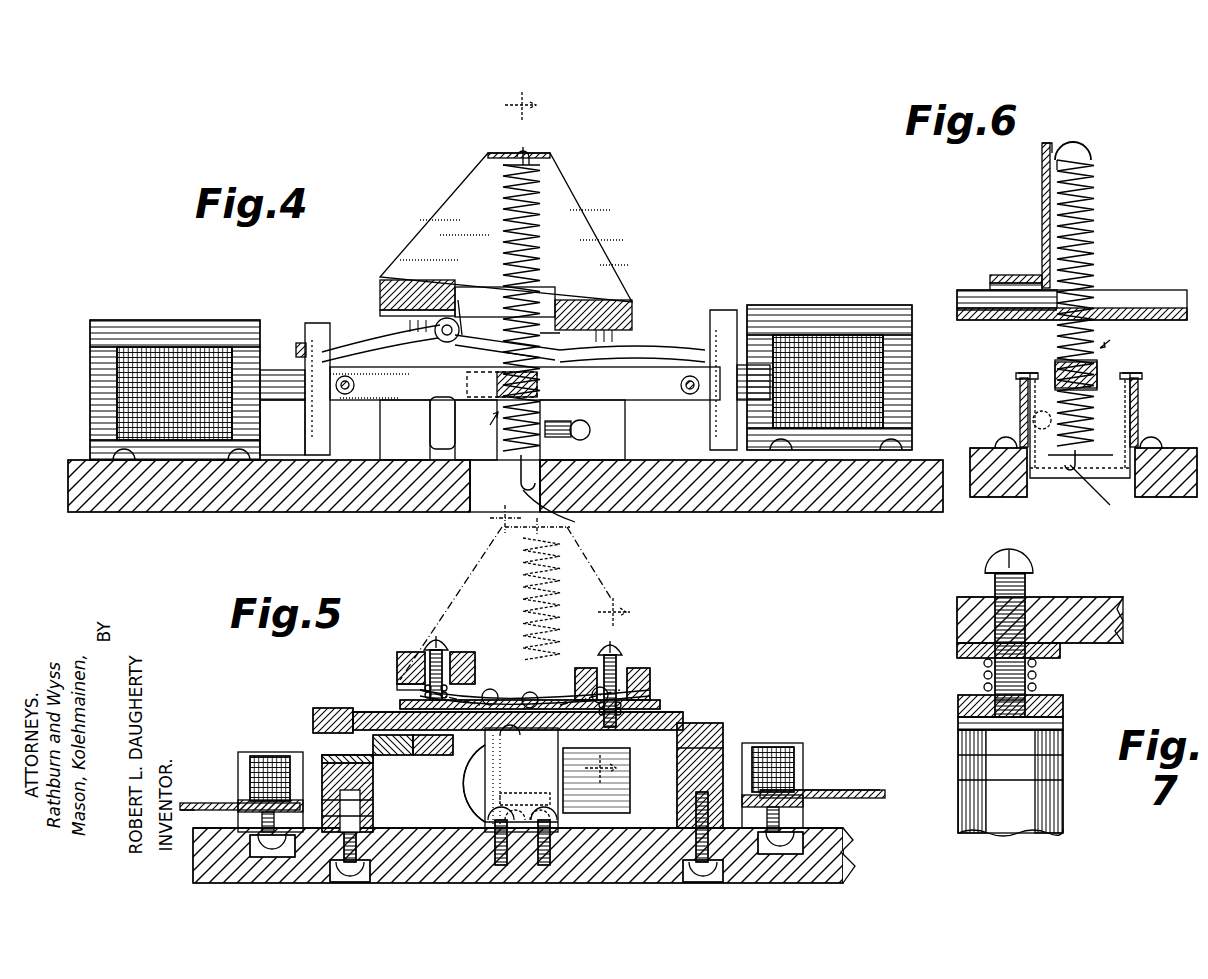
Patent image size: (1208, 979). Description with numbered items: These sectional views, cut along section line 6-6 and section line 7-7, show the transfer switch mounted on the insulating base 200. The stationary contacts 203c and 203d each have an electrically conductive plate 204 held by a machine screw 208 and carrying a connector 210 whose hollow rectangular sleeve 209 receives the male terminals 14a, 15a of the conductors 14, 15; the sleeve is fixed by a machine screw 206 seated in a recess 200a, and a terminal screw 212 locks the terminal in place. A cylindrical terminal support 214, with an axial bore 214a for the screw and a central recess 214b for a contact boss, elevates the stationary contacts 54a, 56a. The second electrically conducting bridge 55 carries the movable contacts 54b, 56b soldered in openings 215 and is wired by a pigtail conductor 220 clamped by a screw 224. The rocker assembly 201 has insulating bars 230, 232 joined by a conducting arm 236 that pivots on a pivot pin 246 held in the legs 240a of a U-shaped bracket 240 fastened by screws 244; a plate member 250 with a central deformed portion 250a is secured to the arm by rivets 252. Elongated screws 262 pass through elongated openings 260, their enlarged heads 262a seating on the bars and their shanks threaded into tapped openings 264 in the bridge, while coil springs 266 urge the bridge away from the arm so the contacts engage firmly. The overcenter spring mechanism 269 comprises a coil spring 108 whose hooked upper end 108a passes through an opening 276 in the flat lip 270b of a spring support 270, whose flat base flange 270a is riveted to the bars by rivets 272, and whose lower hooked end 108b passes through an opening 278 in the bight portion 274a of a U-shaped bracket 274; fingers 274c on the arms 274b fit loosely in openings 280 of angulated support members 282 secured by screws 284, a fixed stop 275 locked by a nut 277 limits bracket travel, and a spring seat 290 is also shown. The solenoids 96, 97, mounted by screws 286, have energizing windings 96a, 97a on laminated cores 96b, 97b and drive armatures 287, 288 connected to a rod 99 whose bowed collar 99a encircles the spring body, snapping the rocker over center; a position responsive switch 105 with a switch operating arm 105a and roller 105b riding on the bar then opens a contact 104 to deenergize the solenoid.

In FIG. 4, the section line 6- 6 is at (526, 318).
In FIG. 5, the section line 7- 7 is at (598, 698).
In FIG. 5, the conductor 14 is at (880, 798).
In FIG. 5, the male terminal 14a is at (840, 775).
In FIG. 5, the conductor 15 is at (196, 810).
In FIG. 5, the male terminal 15a is at (218, 808).
In FIG. 5, the stationary contact 54a is at (677, 757).
In FIG. 7, the stationary contact 54a is at (1065, 765).
In FIG. 5, the movable contact 54b is at (726, 728).
In FIG. 7, the movable contact 54b is at (1065, 735).
In FIG. 4, the second electrically conducting bridge 55 is at (370, 340).
In FIG. 5, the second electrically conducting bridge 55 is at (425, 740).
In FIG. 7, the second electrically conducting bridge 55 is at (1065, 705).
In FIG. 5, the stationary contact 56a is at (385, 740).
In FIG. 4, the movable contact 56b is at (298, 357).
In FIG. 5, the movable contact 56b is at (313, 718).
In FIG. 4, the solenoid 96 is at (175, 372).
In FIG. 4, the energizing winding 96a is at (178, 370).
In FIG. 4, the laminated core 96b is at (152, 322).
In FIG. 4, the solenoid 97 is at (829, 362).
In FIG. 4, the energizing winding 97a is at (840, 350).
In FIG. 4, the laminated core 97b is at (828, 308).
In FIG. 4, the rod 99 is at (393, 400).
In FIG. 6, the rod 99 is at (1098, 365).
In FIG. 4, the collar 99a is at (467, 385).
In FIG. 4, the contact 104 is at (496, 308).
In FIG. 4, the position responsive switch 105 is at (430, 420).
In FIG. 4, the switch operating arm 105a is at (458, 352).
In FIG. 4, the roller 105b is at (479, 299).
In FIG. 4, the coil spring 108 is at (505, 250).
In FIG. 6, the coil spring 108 is at (1092, 210).
In FIG. 4, the hooked upper end 108a is at (519, 155).
In FIG. 6, the hooked upper end 108a is at (1093, 155).
In FIG. 4, the lower hooked end 108b is at (505, 479).
In FIG. 6, the lower hooked end 108b is at (1082, 470).
In FIG. 4, the base 200 is at (505, 486).
In FIG. 6, the base 200 is at (985, 510).
In FIG. 5, the base 200 is at (542, 847).
In FIG. 5, the recess 200a is at (820, 826).
In FIG. 4, the rocker assembly 201 is at (646, 270).
In FIG. 5, the rocker assembly 201 is at (349, 657).
In FIG. 4, the stationary contact 203c is at (731, 282).
In FIG. 5, the stationary contact 203c is at (775, 668).
In FIG. 4, the stationary contact 203d is at (298, 335).
In FIG. 5, the stationary contact 203d is at (228, 771).
In FIG. 5, the electrically conductive plate 204 is at (650, 810).
In FIG. 5, the machine screw 206 is at (782, 845).
In FIG. 5, the machine screw 208 is at (642, 793).
In FIG. 5, the hollow rectangular sleeve 209 is at (752, 745).
In FIG. 5, the connector 210 is at (835, 730).
In FIG. 5, the terminal screw 212 is at (762, 750).
In FIG. 5, the cylindrical terminal support 214 is at (494, 790).
In FIG. 5, the axial bore 214a is at (373, 795).
In FIG. 7, the axial bore 214a is at (1063, 803).
In FIG. 5, the central recess 214b is at (373, 762).
In FIG. 5, the opening 215 is at (705, 718).
In FIG. 5, the pigtail conductor 220 is at (485, 770).
In FIG. 5, the screw 224 is at (530, 808).
In FIG. 4, the insulating bar 230 is at (383, 282).
In FIG. 5, the insulating bar 230 is at (397, 660).
In FIG. 4, the insulating bar 232 is at (632, 300).
In FIG. 6, the insulating bar 232 is at (1160, 290).
In FIG. 5, the insulating bar 232 is at (650, 680).
In FIG. 7, the insulating bar 232 is at (1123, 615).
In FIG. 4, the conducting arm 236 is at (380, 310).
In FIG. 5, the conducting arm 236 is at (397, 687).
In FIG. 7, the conducting arm 236 is at (1060, 655).
In FIG. 5, the U-shaped bracket 240 is at (497, 783).
In FIG. 5, the legs 240a is at (485, 822).
In FIG. 5, the screws 244 is at (553, 848).
In FIG. 5, the pivot pin 246 is at (495, 690).
In FIG. 5, the plate member 250 is at (455, 690).
In FIG. 5, the central deformed portion 250a is at (505, 740).
In FIG. 5, the rivets 252 is at (560, 690).
In FIG. 5, the elongated openings 260 is at (618, 670).
In FIG. 7, the elongated openings 260 is at (995, 597).
In FIG. 5, the elongated screws 262 is at (606, 652).
In FIG. 7, the elongated screws 262 is at (1028, 582).
In FIG. 5, the enlarged heads 262a is at (625, 650).
In FIG. 7, the enlarged heads 262a is at (990, 573).
In FIG. 5, the tapped openings 264 is at (445, 730).
In FIG. 7, the tapped openings 264 is at (975, 703).
In FIG. 4, the coil springs 266 is at (605, 342).
In FIG. 5, the coil springs 266 is at (630, 700).
In FIG. 7, the coil springs 266 is at (1038, 677).
In FIG. 4, the overcenter spring mechanism 269 is at (484, 430).
In FIG. 6, the overcenter spring mechanism 269 is at (1123, 336).
In FIG. 4, the spring support 270 is at (592, 207).
In FIG. 6, the spring support 270 is at (1019, 216).
In FIG. 6, the flat base flange 270a is at (1017, 275).
In FIG. 4, the flat lip 270b is at (532, 155).
In FIG. 6, the flat lip 270b is at (1085, 145).
In FIG. 6, the rivets 272 is at (1010, 322).
In FIG. 4, the U-shaped bracket 274 is at (564, 511).
In FIG. 6, the U-shaped bracket 274 is at (1086, 432).
In FIG. 6, the bight portion 274a is at (1070, 480).
In FIG. 6, the arms 274b is at (1140, 390).
In FIG. 6, the fingers 274c is at (1145, 374).
In FIG. 4, the fixed stop 275 is at (592, 435).
In FIG. 6, the fixed stop 275 is at (1022, 437).
In FIG. 6, the opening 276 is at (1052, 143).
In FIG. 4, the nut 277 is at (585, 425).
In FIG. 4, the opening 278 is at (542, 485).
In FIG. 6, the opening 278 is at (1099, 493).
In FIG. 6, the openings 280 is at (1142, 377).
In FIG. 4, the angulated support members 282 is at (468, 485).
In FIG. 6, the angulated support members 282 is at (1138, 408).
In FIG. 6, the screws 284 is at (1165, 442).
In FIG. 4, the screws 286 is at (903, 432).
In FIG. 4, the armature 287 is at (318, 322).
In FIG. 4, the armature 288 is at (728, 310).
In FIG. 4, the spring seat 290 is at (540, 382).
In FIG. 6, the spring seat 290 is at (1055, 365).